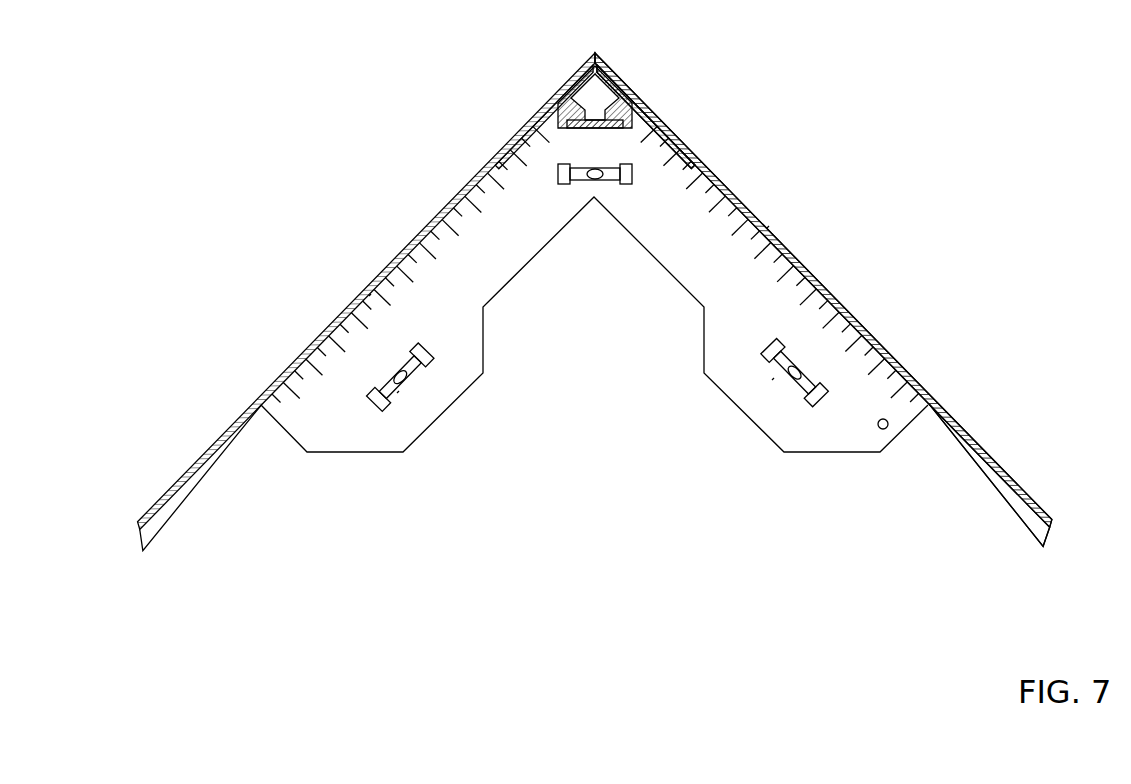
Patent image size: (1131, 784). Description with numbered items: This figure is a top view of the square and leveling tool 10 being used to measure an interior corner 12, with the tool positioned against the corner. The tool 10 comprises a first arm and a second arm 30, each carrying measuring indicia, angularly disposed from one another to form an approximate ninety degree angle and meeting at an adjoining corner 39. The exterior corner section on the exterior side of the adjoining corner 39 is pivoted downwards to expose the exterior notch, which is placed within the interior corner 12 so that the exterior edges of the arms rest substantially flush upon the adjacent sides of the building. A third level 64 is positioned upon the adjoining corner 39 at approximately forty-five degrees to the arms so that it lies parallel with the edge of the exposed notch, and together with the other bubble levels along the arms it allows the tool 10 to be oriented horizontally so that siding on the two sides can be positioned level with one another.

The square and leveling tool 10 is at (592, 318).
The interior corner 12 is at (578, 93).
The second arm 30 is at (348, 400).
The adjoining corner 39 is at (590, 145).
The third level 64 is at (606, 186).